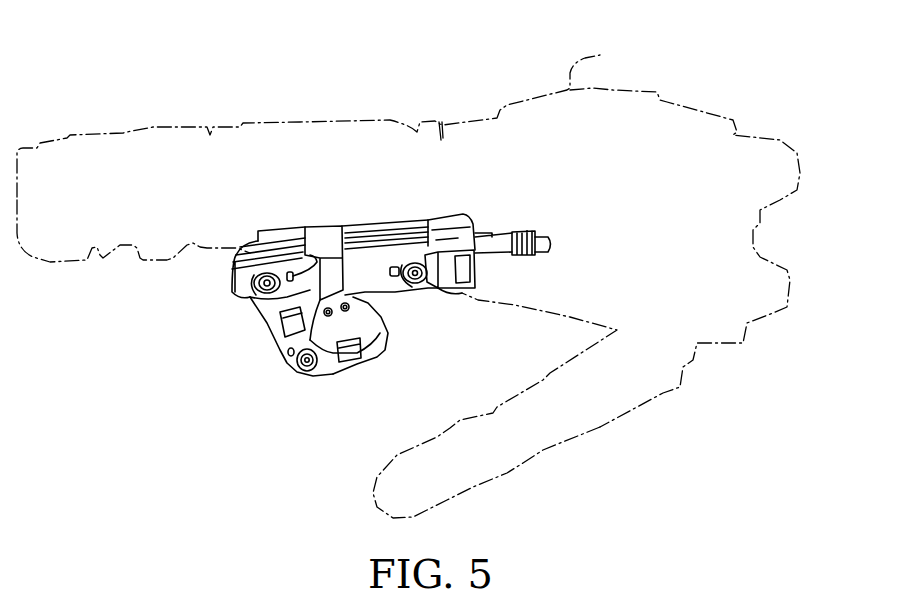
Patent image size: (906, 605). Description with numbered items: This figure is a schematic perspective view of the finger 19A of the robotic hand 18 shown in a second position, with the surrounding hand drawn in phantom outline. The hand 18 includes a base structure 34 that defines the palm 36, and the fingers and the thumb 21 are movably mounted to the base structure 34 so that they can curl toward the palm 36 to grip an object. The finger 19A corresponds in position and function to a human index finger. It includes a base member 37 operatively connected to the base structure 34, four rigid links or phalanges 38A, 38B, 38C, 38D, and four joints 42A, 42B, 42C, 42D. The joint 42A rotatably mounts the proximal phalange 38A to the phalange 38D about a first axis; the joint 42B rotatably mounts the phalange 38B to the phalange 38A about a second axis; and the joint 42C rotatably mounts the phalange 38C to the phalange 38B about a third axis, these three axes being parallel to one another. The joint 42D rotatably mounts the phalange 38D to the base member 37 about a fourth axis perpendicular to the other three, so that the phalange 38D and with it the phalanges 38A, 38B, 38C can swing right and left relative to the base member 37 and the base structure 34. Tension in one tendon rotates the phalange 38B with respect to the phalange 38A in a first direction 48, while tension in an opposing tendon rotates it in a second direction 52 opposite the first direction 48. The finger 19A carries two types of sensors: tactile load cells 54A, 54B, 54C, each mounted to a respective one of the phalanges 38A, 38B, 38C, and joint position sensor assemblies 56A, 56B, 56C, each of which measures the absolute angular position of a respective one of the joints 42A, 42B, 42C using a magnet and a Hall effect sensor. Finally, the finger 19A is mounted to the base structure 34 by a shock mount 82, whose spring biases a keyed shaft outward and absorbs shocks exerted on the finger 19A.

The hand 18 is at (78, 114).
The base structure 34 is at (600, 55).
The thumb 21 is at (373, 498).
The palm 36 is at (567, 316).
The second direction 52 is at (140, 276).
The first direction 48 is at (130, 360).
The finger 19A is at (298, 415).
The proximal phalange 38A is at (345, 242).
The phalange 38B is at (280, 290).
The phalange 38C is at (350, 358).
The phalange 38D is at (442, 268).
The joint 42A is at (396, 252).
The joint 42B is at (235, 263).
The joint 42C is at (310, 373).
The joint 42D is at (432, 220).
The tactile load cell 54A is at (313, 243).
The tactile load cell 54B is at (366, 292).
The tactile load cell 54C is at (388, 342).
The joint position sensor assembly 56A is at (358, 226).
The joint position sensor assembly 56B is at (234, 302).
The joint position sensor assembly 56C is at (320, 396).
The base member 37 is at (458, 215).
The shock mount 82 is at (545, 205).